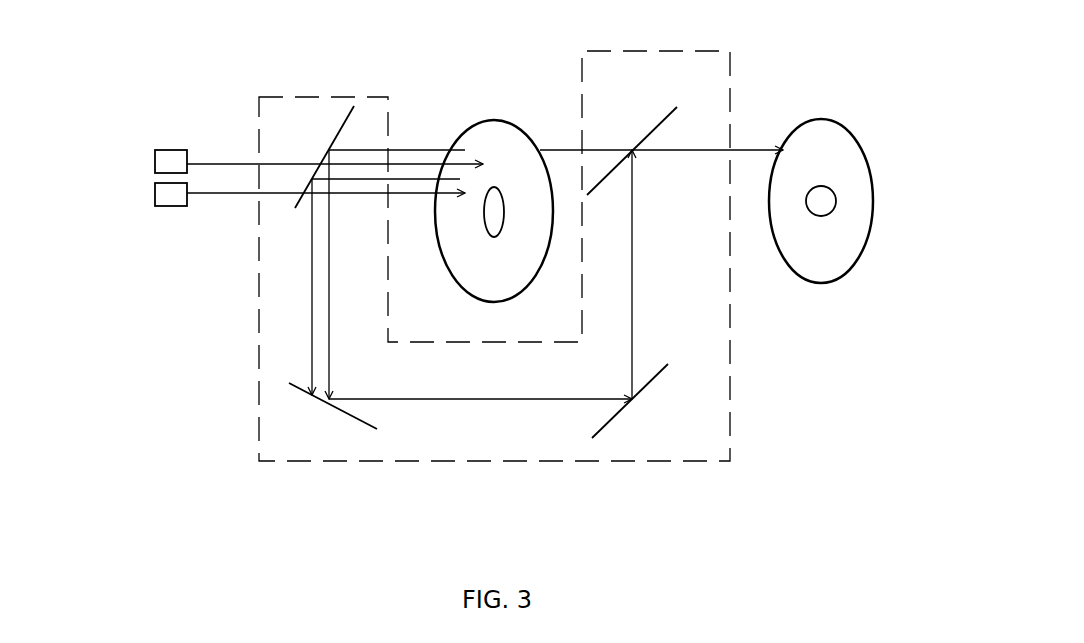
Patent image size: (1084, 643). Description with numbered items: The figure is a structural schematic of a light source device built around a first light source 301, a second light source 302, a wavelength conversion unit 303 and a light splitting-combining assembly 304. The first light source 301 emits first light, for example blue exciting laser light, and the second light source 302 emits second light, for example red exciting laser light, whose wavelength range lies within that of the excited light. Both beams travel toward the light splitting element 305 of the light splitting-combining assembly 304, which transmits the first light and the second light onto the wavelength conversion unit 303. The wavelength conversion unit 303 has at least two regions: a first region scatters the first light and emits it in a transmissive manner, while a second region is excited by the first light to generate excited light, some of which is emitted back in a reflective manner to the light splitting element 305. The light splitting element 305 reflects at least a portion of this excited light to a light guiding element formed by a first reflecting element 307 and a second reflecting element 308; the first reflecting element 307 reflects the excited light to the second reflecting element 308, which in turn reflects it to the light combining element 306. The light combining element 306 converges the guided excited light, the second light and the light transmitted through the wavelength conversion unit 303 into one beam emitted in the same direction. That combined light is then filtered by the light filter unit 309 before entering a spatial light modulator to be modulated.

The first light source 301 is at (155, 206).
The second light source 302 is at (155, 150).
The wavelength conversion unit 303 is at (488, 120).
The light splitting-combining assembly 304 is at (475, 462).
The light splitting element 305 is at (342, 122).
The light combining element 306 is at (647, 133).
The first reflecting element 307 is at (312, 396).
The second reflecting element 308 is at (640, 385).
The light filter unit 309 is at (840, 277).